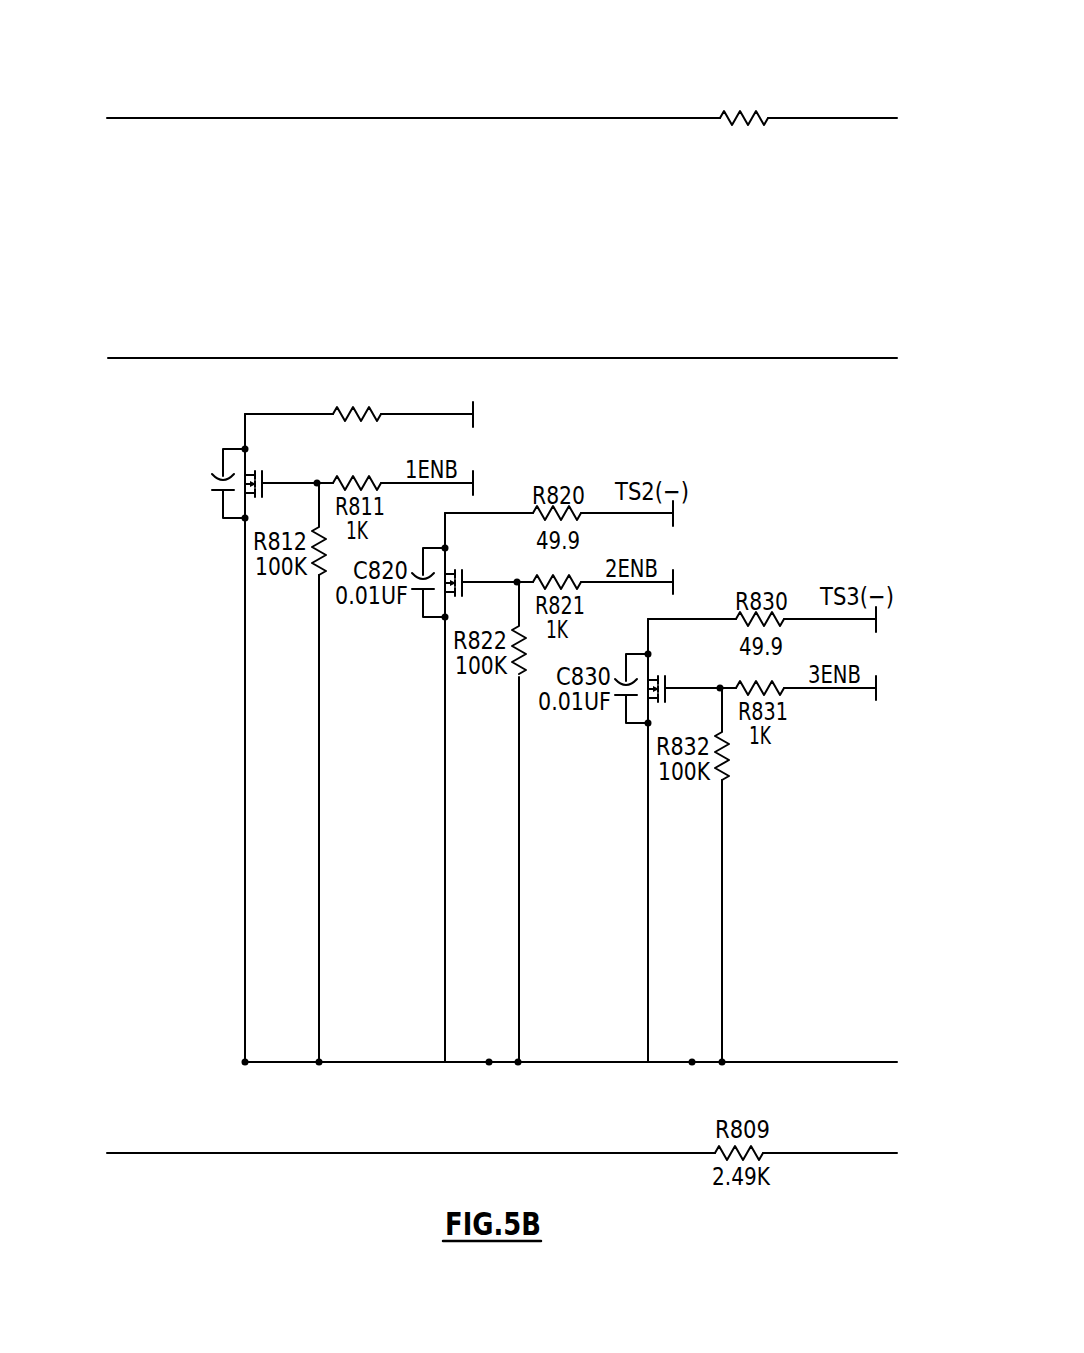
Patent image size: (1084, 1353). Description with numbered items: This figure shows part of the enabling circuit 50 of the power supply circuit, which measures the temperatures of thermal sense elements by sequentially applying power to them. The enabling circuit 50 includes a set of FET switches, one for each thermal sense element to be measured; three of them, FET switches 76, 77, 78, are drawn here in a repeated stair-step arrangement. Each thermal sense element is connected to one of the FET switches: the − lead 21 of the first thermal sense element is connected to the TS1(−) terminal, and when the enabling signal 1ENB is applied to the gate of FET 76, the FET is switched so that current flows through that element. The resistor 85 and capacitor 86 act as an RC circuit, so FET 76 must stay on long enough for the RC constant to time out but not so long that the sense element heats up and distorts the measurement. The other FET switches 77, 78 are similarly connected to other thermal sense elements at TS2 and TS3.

The enabling circuit 50 is at (480, 86).
The resistor 85 is at (369, 378).
The − lead 21 is at (433, 412).
The capacitor 86 is at (197, 516).
The FET switch 76 is at (231, 511).
The FET switch 77 is at (431, 610).
The FET switch 78 is at (636, 715).